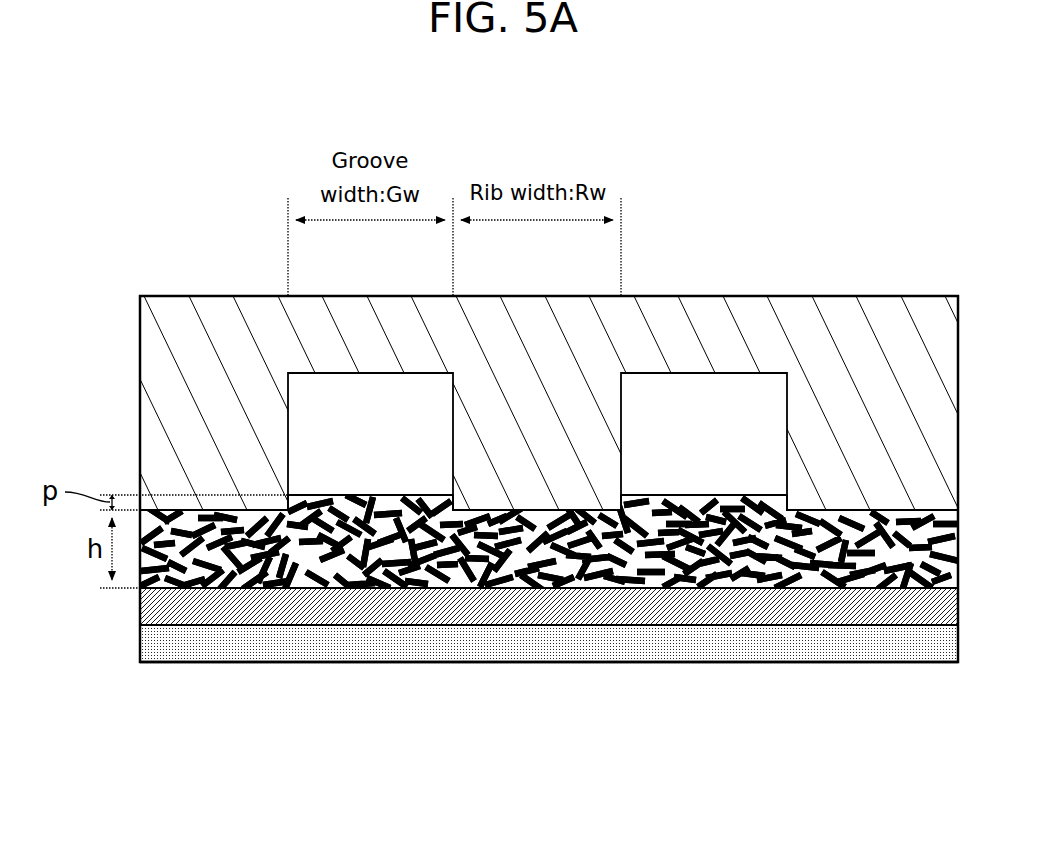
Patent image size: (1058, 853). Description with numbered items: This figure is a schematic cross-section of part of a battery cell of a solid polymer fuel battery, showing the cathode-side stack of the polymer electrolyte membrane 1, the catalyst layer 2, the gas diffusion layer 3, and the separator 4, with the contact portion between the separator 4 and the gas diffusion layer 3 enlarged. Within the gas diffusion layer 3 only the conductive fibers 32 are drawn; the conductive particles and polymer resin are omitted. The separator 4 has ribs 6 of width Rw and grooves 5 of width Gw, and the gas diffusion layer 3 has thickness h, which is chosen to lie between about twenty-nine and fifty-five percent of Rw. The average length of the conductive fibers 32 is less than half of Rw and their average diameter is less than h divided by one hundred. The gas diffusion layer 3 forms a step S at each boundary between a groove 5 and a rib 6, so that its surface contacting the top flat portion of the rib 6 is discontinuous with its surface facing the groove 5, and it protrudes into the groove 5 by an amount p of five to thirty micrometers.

The polymer electrolyte membrane 1 is at (140, 635).
The catalyst layer 2 is at (140, 598).
The gas diffusion layer 3 is at (177, 553).
The conductive fibers 32 is at (695, 575).
The separator 4 is at (155, 318).
The groove 5 is at (368, 470).
The rib 6 is at (180, 428).
The step S is at (291, 495).